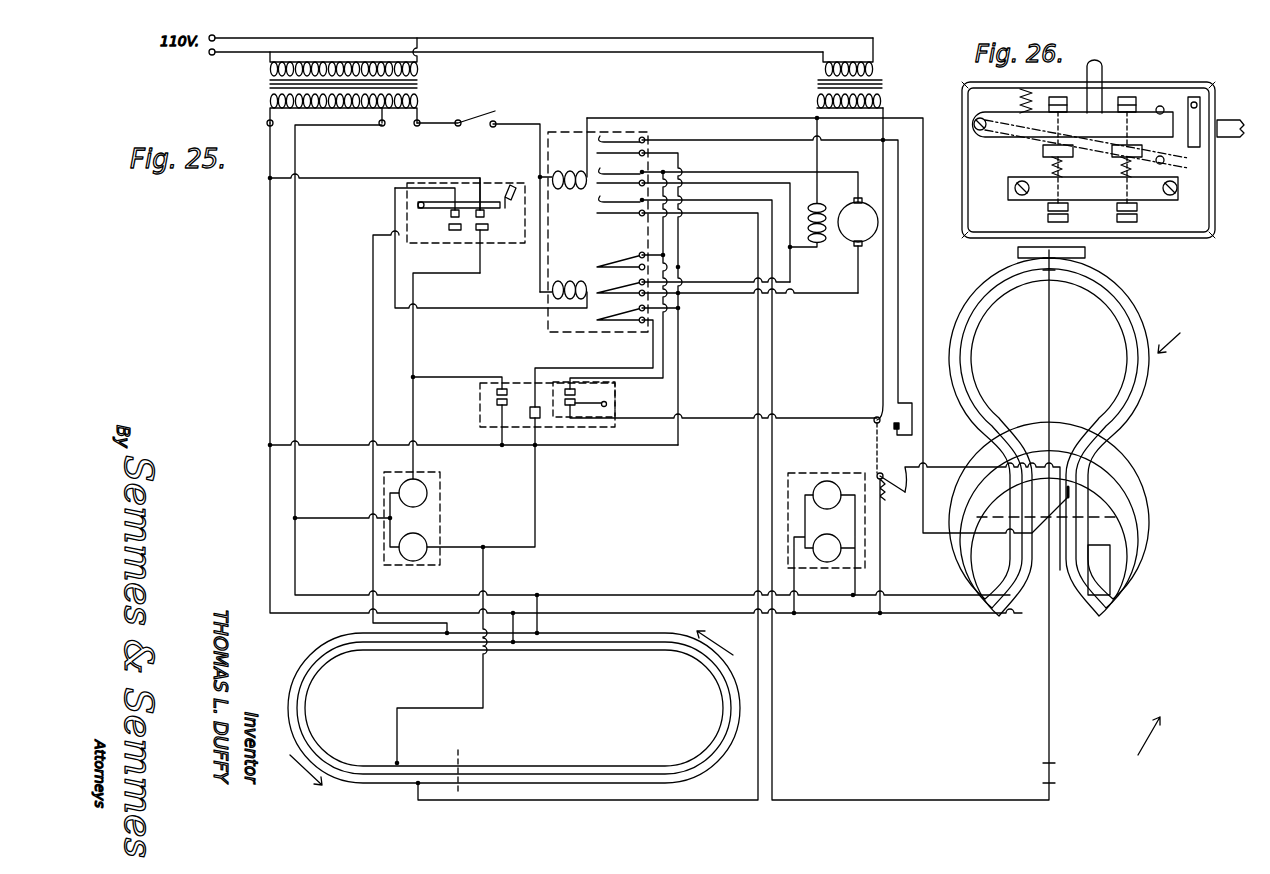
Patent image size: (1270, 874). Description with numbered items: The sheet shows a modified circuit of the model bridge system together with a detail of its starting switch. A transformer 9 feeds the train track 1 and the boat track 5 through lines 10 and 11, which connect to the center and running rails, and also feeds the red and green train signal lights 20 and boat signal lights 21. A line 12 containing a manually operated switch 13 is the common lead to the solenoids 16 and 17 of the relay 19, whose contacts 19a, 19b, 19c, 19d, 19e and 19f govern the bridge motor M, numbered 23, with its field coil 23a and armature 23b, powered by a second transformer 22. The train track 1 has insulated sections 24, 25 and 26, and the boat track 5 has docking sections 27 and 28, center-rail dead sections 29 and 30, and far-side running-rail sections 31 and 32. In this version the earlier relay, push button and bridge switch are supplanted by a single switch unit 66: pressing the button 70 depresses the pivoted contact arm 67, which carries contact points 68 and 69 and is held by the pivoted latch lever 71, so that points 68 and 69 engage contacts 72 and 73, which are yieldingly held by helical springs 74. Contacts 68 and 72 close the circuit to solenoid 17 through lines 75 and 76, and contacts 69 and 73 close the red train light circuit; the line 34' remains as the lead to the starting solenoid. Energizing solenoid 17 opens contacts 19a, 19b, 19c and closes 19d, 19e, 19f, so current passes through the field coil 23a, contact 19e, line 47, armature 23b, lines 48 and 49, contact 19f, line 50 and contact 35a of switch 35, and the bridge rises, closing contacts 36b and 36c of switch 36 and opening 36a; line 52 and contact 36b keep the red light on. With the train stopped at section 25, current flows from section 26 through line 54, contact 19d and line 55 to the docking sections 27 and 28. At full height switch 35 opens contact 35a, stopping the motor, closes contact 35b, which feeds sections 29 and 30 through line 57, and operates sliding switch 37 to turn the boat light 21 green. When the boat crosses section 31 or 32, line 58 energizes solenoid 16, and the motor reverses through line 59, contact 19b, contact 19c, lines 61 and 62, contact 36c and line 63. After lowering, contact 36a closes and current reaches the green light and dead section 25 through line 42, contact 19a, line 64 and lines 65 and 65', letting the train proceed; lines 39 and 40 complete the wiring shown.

In FIG. 25, the train track 1 is at (289, 673).
In FIG. 25, the boat track 5 is at (1064, 515).
In FIG. 25, the transformer 9 is at (270, 85).
In FIG. 25, the line 10 is at (270, 236).
In FIG. 25, the line 11 is at (295, 222).
In FIG. 25, the line 12 is at (458, 120).
In FIG. 25, the manually operated switch 13 is at (494, 118).
In FIG. 25, the operating solenoid 16 is at (568, 168).
In FIG. 25, the operating solenoid 17 is at (570, 278).
In FIG. 25, the relay 19 is at (554, 131).
In FIG. 25, the contact 19a is at (621, 309).
In FIG. 25, the contact 19b is at (621, 283).
In FIG. 25, the contact 19c is at (621, 256).
In FIG. 25, the contact 19d is at (621, 206).
In FIG. 25, the contact 19e is at (621, 177).
In FIG. 25, the contact 19f is at (621, 146).
In FIG. 25, the train signal lights 20 is at (442, 505).
In FIG. 25, the boat signal lights 21 is at (830, 472).
In FIG. 25, the second transformer 22 is at (818, 84).
In FIG. 25, the bridge motor 23 is at (827, 250).
In FIG. 25, the field coil 23a is at (822, 204).
In FIG. 25, the armature 23b is at (845, 252).
In FIG. 25, the insulated section 24 is at (460, 640).
In FIG. 25, the insulated section 25 is at (400, 764).
In FIG. 25, the insulated section 26 is at (412, 786).
In FIG. 25, the insulated section 27 is at (1046, 270).
In FIG. 25, the insulated section 28 is at (1052, 766).
In FIG. 25, the insulated section 29 is at (1012, 483).
In FIG. 25, the insulated section 30 is at (1086, 582).
In FIG. 25, the insulated section 31 is at (1030, 582).
In FIG. 25, the insulated section 32 is at (1070, 491).
In FIG. 25, the line 34' is at (374, 181).
In FIG. 25, the switch 35 is at (949, 504).
In FIG. 25, the contact 35a is at (874, 418).
In FIG. 25, the contact 35b is at (908, 494).
In FIG. 25, the switch 36 is at (549, 413).
In FIG. 25, the contact 36a is at (541, 418).
In FIG. 25, the contact 36b is at (495, 395).
In FIG. 25, the contact 36c is at (576, 391).
In FIG. 25, the sliding switch 37 is at (795, 540).
In FIG. 25, the conductor 39 is at (324, 520).
In FIG. 25, the conductor 40 is at (478, 276).
In FIG. 25, the line 42 is at (678, 314).
In FIG. 25, the line 47 is at (713, 172).
In FIG. 25, the line 48 is at (788, 300).
In FIG. 25, the line 49 is at (678, 250).
In FIG. 25, the line 50 is at (712, 136).
In FIG. 25, the line 52 is at (460, 376).
In FIG. 25, the line 54 is at (702, 212).
In FIG. 25, the line 55 is at (698, 203).
In FIG. 25, the line 57 is at (977, 480).
In FIG. 25, the line 58 is at (657, 118).
In FIG. 25, the line 59 is at (716, 281).
In FIG. 25, the line 61 is at (660, 228).
In FIG. 25, the line 62 is at (665, 350).
In FIG. 25, the line 63 is at (699, 424).
In FIG. 25, the line 64 is at (602, 369).
In FIG. 25, the line 65 is at (493, 482).
In FIG. 25, the line 65' is at (455, 655).
In FIG. 25, the switch unit 66 is at (460, 211).
In FIG. 26, the switch unit 66 is at (967, 80).
In FIG. 25, the pivoted contact arm 67 is at (458, 198).
In FIG. 26, the pivoted contact arm 67 is at (1000, 138).
In FIG. 25, the contact point 68 is at (449, 216).
In FIG. 26, the contact point 68 is at (1044, 150).
In FIG. 25, the contact point 69 is at (486, 216).
In FIG. 26, the contact point 69 is at (1148, 140).
In FIG. 26, the button 70 is at (1104, 72).
In FIG. 26, the pivoted latch lever 71 is at (1205, 122).
In FIG. 25, the contact 72 is at (449, 230).
In FIG. 26, the contact 72 is at (1040, 158).
In FIG. 25, the contact 73 is at (488, 230).
In FIG. 26, the contact 73 is at (1170, 157).
In FIG. 26, the helical springs 74 is at (1072, 166).
In FIG. 25, the line 75 is at (484, 309).
In FIG. 25, the line 76 is at (373, 377).
In FIG. 25, the motor M is at (858, 245).